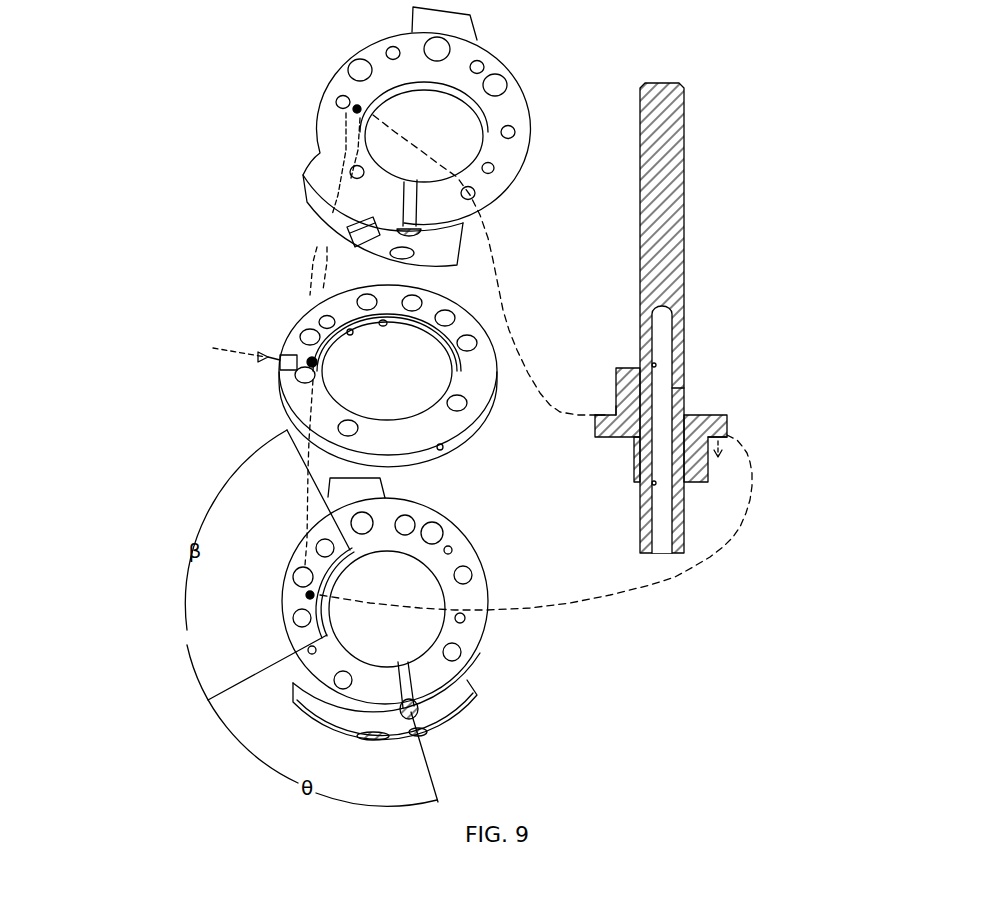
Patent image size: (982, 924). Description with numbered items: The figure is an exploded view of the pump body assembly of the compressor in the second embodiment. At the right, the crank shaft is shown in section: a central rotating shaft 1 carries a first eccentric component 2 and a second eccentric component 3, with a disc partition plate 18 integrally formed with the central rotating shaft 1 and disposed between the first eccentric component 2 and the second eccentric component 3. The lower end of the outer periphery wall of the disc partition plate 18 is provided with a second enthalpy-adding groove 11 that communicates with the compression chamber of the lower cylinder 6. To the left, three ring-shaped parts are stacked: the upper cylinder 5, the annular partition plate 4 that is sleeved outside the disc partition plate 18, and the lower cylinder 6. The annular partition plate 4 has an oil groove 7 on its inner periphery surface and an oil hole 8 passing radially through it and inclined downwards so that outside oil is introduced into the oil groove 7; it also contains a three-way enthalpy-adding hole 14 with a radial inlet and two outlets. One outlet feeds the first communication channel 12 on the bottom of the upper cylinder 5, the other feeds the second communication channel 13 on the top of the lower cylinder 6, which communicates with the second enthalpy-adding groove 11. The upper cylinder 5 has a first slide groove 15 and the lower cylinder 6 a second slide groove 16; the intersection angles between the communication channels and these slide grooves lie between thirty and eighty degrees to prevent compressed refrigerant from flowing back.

The central rotating shaft 1 is at (657, 227).
The first eccentric component 2 is at (623, 372).
The second eccentric component 3 is at (694, 470).
The annular partition plate 4 is at (477, 365).
The upper cylinder 5 is at (513, 105).
The lower cylinder 6 is at (315, 663).
The oil groove 7 is at (350, 332).
The oil hole 8 is at (383, 322).
The second enthalpy-adding groove 11 is at (727, 437).
The first communication channel 12 is at (353, 108).
The second communication channel 13 is at (318, 597).
The three-way enthalpy-adding hole 14 is at (308, 360).
The first slide groove 15 is at (413, 197).
The second slide groove 16 is at (413, 688).
The disc partition plate 18 is at (603, 415).